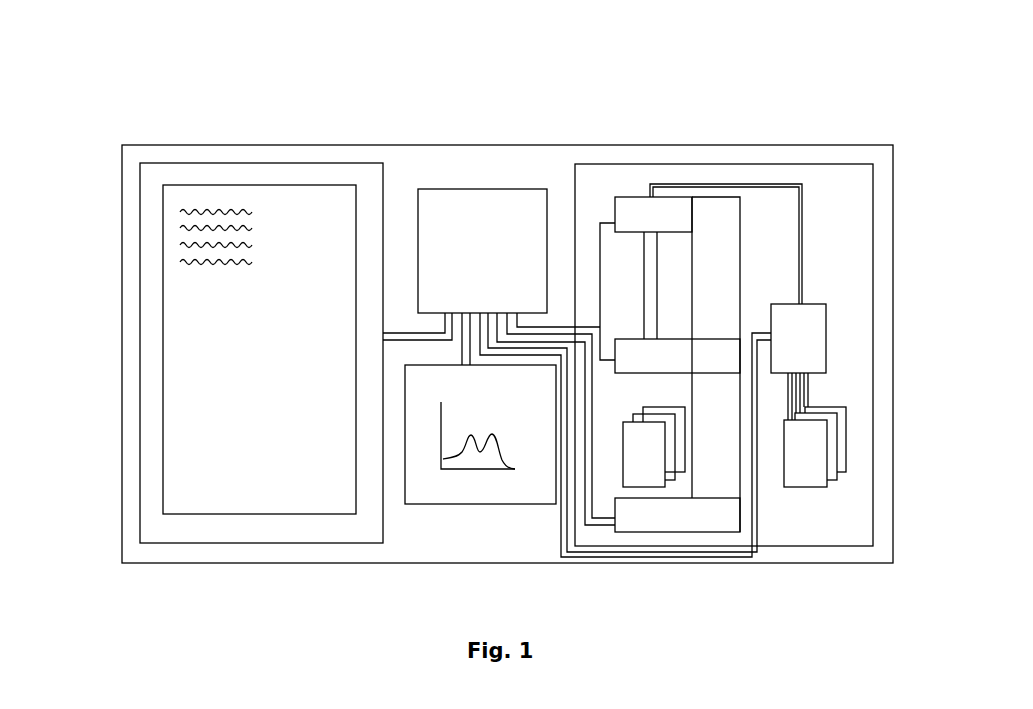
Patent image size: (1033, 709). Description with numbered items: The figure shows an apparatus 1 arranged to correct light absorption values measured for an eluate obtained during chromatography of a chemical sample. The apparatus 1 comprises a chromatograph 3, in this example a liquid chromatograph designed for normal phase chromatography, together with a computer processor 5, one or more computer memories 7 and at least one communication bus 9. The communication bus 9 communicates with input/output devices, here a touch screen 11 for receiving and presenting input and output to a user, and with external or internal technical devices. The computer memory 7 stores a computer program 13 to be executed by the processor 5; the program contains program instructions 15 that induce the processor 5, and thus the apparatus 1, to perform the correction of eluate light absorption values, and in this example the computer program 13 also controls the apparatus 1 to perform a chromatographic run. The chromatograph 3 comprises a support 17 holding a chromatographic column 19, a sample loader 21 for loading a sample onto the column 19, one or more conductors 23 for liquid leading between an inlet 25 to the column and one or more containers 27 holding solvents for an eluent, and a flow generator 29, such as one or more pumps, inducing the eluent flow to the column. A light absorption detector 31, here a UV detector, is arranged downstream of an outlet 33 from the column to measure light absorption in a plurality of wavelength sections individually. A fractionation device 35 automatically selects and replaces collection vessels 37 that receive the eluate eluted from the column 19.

The apparatus 1 is at (462, 535).
The chromatograph 3 is at (840, 503).
The computer processor 5 is at (503, 255).
The computer memory 7 is at (153, 179).
The communication bus 9 is at (520, 337).
The touch screen 11 is at (453, 458).
The computer program 13 is at (178, 312).
The program instructions 15 is at (178, 212).
The support 17 is at (715, 208).
The chromatographic column 19 is at (652, 282).
The sample loader 21 is at (648, 212).
The conductors 23 is at (800, 388).
The inlet 25 is at (650, 239).
The containers 27 is at (810, 448).
The flow generator 29 is at (800, 340).
The light absorption detector 31 is at (652, 353).
The outlet 33 is at (652, 326).
The fractionation device 35 is at (680, 513).
The collection vessels 37 is at (643, 454).